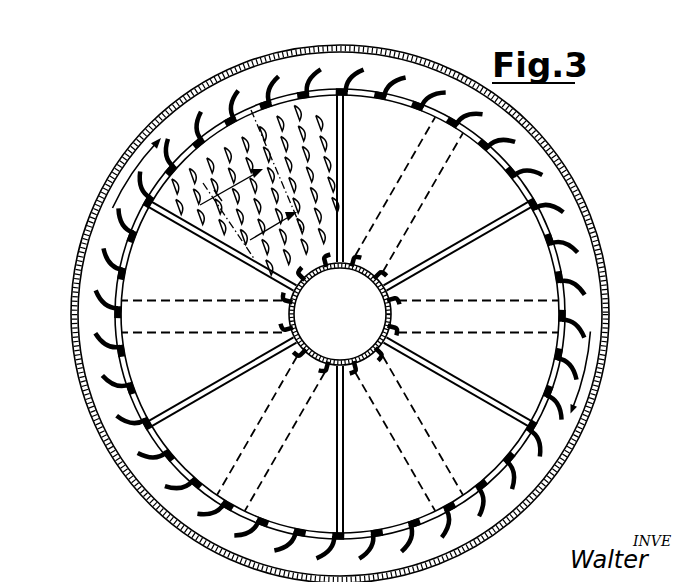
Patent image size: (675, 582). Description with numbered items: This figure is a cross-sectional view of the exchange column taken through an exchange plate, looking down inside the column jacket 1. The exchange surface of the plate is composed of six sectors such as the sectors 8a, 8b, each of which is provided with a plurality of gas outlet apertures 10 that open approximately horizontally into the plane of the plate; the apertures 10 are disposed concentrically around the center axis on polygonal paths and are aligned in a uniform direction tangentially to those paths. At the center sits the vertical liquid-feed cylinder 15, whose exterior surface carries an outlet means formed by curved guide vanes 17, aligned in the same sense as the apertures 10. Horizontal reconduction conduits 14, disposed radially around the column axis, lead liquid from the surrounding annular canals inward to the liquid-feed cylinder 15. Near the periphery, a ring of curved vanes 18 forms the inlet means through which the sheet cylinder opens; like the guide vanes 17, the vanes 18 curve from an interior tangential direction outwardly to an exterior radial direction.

The column jacket 1 is at (591, 219).
The sector 8a is at (146, 368).
The sector 8b is at (192, 163).
The gas outlet apertures 10 is at (297, 184).
The reconduction conduits 14 is at (440, 176).
The liquid-feed cylinder 15 is at (354, 298).
The curved guide vanes 17 is at (322, 373).
The curved vanes 18 is at (118, 216).